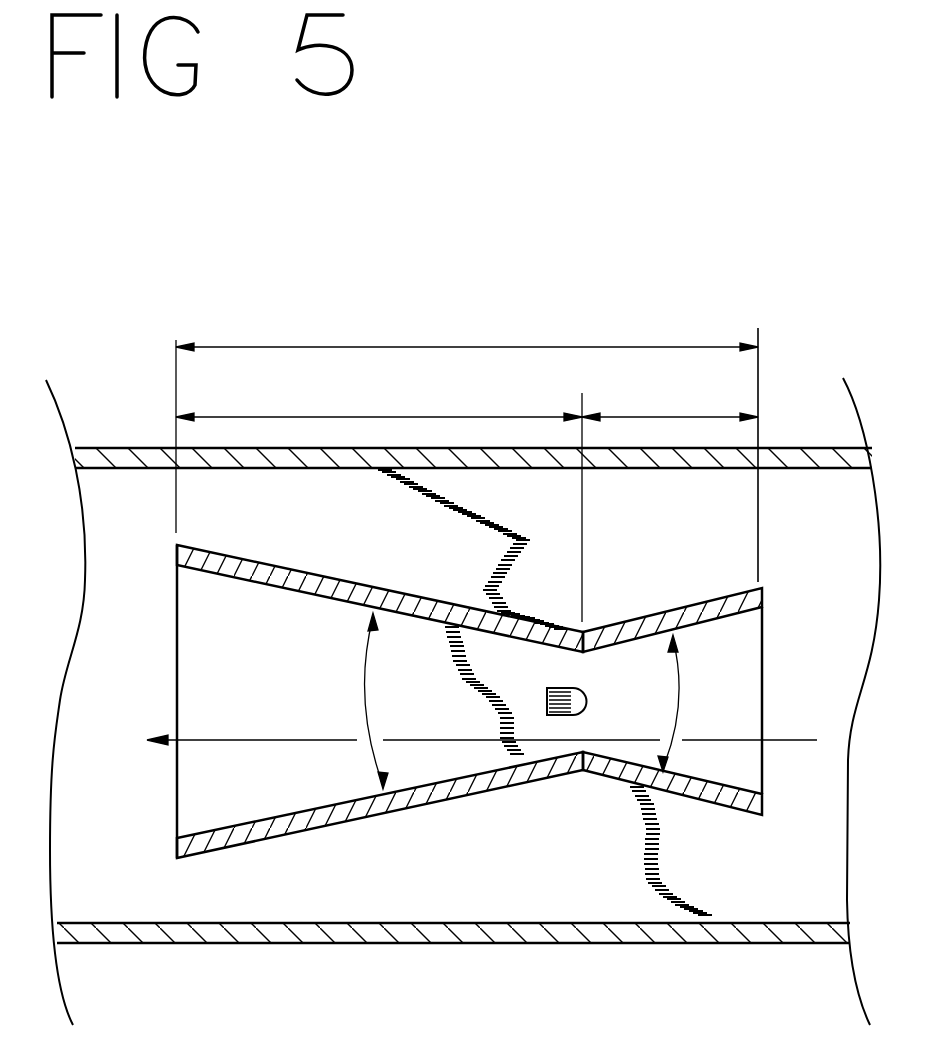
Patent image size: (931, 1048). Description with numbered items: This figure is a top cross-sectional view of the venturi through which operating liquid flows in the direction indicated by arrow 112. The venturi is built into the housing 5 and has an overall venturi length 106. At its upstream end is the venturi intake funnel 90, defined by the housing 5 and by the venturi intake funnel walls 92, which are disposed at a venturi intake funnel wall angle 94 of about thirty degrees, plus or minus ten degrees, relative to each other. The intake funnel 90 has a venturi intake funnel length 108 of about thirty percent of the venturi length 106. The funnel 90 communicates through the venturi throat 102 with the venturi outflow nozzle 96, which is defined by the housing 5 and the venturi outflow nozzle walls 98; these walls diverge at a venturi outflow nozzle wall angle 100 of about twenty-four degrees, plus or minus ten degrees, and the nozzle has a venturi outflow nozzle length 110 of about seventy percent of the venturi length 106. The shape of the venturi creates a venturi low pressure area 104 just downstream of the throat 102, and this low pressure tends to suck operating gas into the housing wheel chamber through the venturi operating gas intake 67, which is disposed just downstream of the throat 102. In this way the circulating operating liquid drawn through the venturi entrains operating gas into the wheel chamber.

The housing 5 is at (783, 447).
The venturi operating gas intake 67 is at (555, 688).
The venturi intake funnel 90 is at (725, 640).
The venturi intake funnel walls 92 is at (655, 612).
The venturi intake funnel wall angle 94 is at (680, 700).
The venturi outflow nozzle 96 is at (415, 662).
The venturi outflow nozzle walls 98 is at (328, 578).
The venturi outflow nozzle wall angle 100 is at (365, 683).
The venturi throat 102 is at (583, 775).
The venturi low pressure area 104 is at (470, 710).
The venturi length 106 is at (482, 345).
The venturi intake funnel length 108 is at (650, 413).
The venturi outflow nozzle length 110 is at (355, 415).
The arrow 112 is at (800, 742).